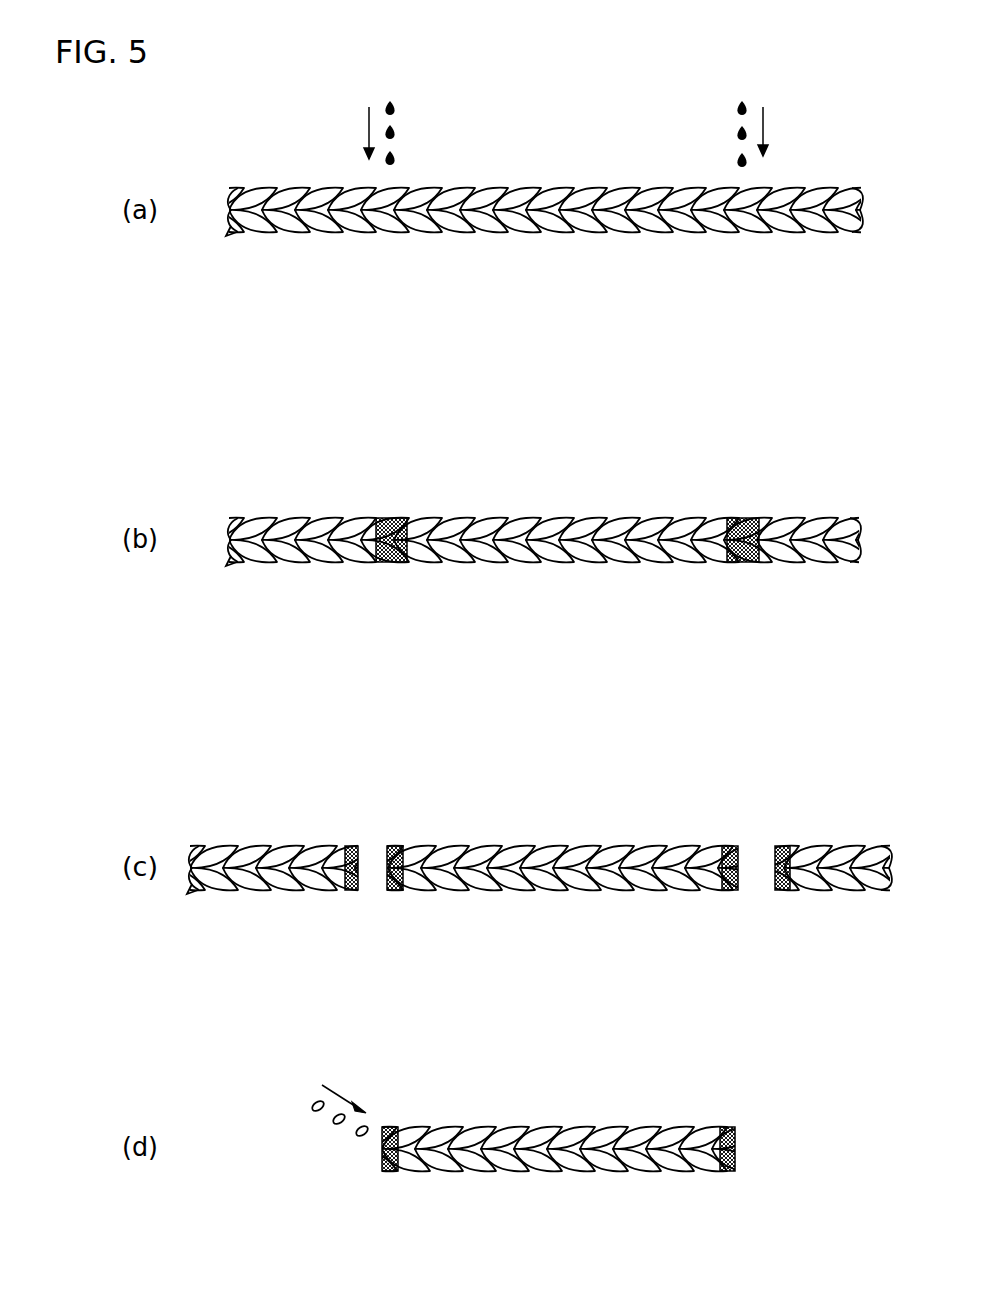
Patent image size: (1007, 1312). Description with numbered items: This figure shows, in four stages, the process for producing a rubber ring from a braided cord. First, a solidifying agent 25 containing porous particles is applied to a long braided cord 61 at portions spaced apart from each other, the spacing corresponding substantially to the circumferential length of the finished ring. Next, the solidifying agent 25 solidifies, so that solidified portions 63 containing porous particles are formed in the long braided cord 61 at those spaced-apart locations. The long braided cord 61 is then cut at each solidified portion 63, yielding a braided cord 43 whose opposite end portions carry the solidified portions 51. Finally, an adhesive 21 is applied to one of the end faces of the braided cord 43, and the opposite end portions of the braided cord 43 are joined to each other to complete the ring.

The adhesive 21 is at (338, 1124).
The solidifying agent 25 is at (395, 130).
The braided cord 43 is at (555, 846).
The solidified portions 51 is at (352, 846).
The long braided cord 61 is at (553, 188).
The solidified portions 63 is at (392, 518).